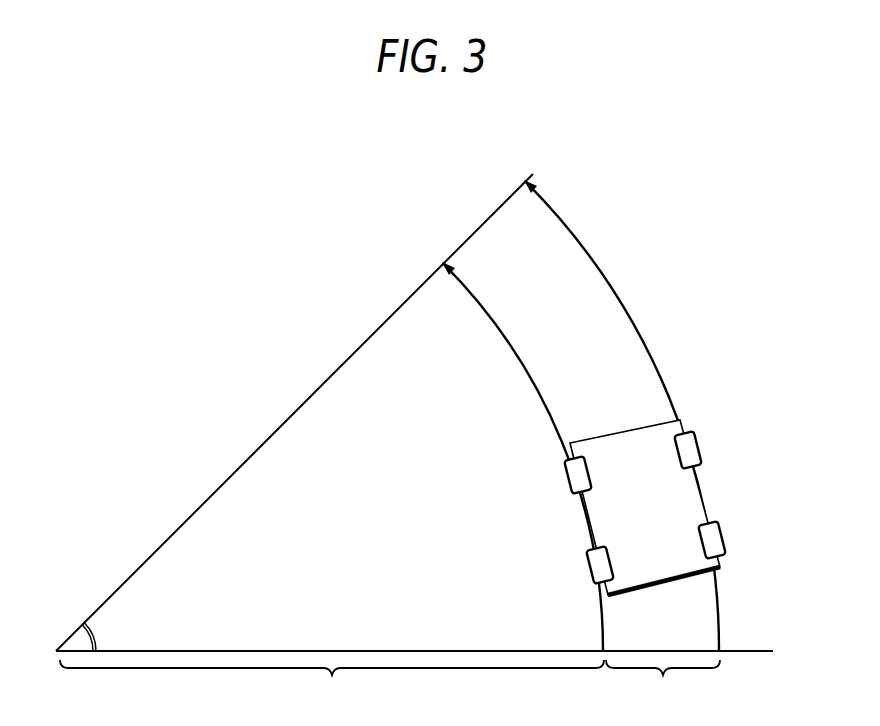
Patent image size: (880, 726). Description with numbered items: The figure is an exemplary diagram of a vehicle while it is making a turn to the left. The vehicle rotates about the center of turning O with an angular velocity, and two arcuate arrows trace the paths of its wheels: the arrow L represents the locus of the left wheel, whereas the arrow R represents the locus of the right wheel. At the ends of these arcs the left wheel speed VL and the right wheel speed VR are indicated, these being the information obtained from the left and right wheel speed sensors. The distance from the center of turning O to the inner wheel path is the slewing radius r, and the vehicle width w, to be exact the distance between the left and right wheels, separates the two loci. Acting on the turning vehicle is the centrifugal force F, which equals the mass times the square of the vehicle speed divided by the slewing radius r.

The center of turning O is at (38, 654).
The right wheel speed VR is at (513, 178).
The left wheel speed VL is at (431, 261).
The locus of the right wheel R is at (604, 407).
The locus of the left wheel L is at (505, 449).
The centrifugal force F is at (637, 508).
The slewing radius r is at (332, 683).
The vehicle width w is at (663, 683).